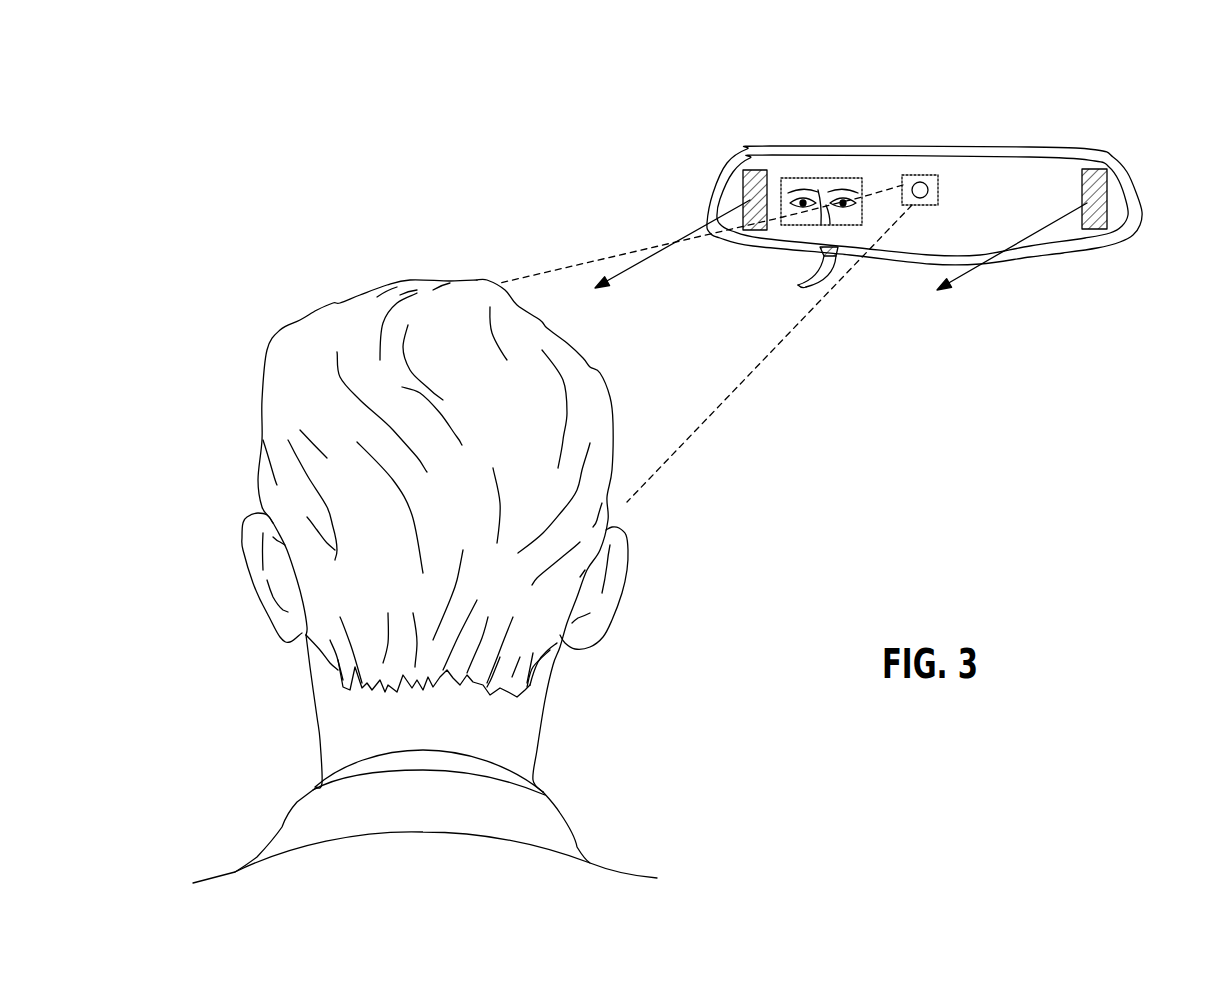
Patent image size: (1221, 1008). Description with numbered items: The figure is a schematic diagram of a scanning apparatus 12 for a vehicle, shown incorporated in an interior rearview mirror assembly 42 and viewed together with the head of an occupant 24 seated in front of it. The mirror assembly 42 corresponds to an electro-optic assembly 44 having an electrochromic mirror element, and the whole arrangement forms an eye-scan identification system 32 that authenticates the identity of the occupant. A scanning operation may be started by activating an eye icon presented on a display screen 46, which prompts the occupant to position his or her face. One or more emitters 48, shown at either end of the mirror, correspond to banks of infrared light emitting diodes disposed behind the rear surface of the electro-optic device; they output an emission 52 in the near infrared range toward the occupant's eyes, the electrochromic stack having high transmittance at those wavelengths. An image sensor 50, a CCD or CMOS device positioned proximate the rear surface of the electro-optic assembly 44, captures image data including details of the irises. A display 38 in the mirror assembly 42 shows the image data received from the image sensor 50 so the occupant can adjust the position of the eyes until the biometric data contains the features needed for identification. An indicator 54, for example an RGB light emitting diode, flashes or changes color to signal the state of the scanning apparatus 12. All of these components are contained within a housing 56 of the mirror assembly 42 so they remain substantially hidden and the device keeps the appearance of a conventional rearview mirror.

The scanning apparatus 12 is at (858, 268).
The driver head 24 is at (358, 302).
The display mirror 32 is at (1149, 160).
The display 38 is at (812, 183).
The interior rearview mirror assembly 42 is at (1077, 147).
The electro-optic assembly 44 is at (836, 154).
The display screen 46 is at (977, 167).
The emitter 48 is at (745, 188).
The image sensor 50 is at (922, 185).
The emission 52 is at (640, 257).
The indicator 54 is at (797, 274).
The housing 56 is at (1083, 247).